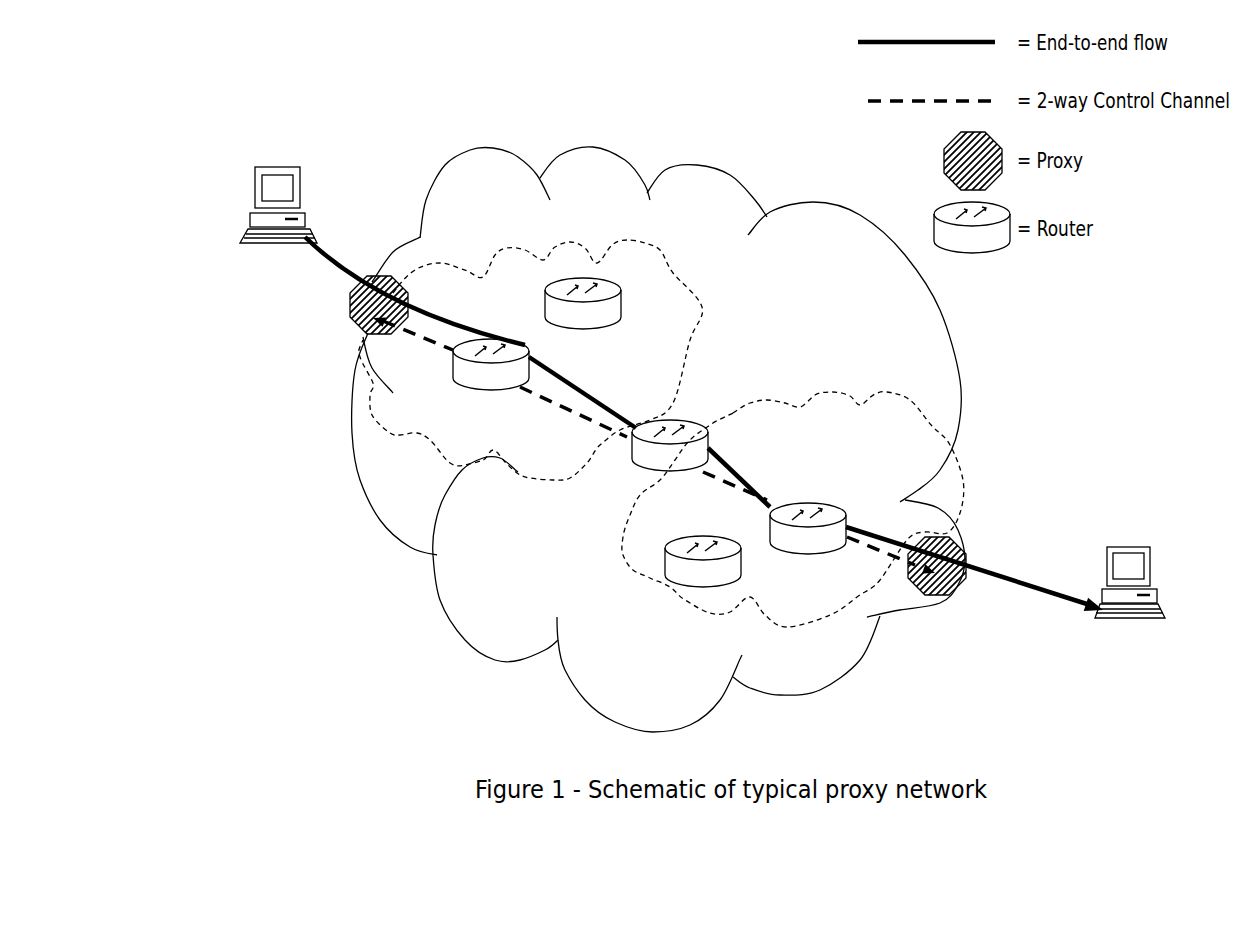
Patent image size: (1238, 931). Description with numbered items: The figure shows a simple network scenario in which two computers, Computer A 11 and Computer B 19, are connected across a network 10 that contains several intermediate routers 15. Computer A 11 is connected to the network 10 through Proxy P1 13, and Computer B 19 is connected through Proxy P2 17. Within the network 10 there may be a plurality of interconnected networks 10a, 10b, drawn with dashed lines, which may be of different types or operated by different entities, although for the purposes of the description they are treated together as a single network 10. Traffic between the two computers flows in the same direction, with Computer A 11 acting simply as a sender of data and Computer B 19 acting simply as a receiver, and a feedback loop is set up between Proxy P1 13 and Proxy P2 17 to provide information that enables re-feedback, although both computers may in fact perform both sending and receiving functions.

The network 10 is at (605, 147).
The interconnected network 10a is at (443, 263).
The interconnected network 10b is at (763, 398).
The Computer A 11 is at (278, 162).
The Proxy P1 13 is at (350, 325).
The intermediate routers 15 is at (493, 388).
The Proxy P2 17 is at (947, 597).
The Computer B 19 is at (1125, 540).